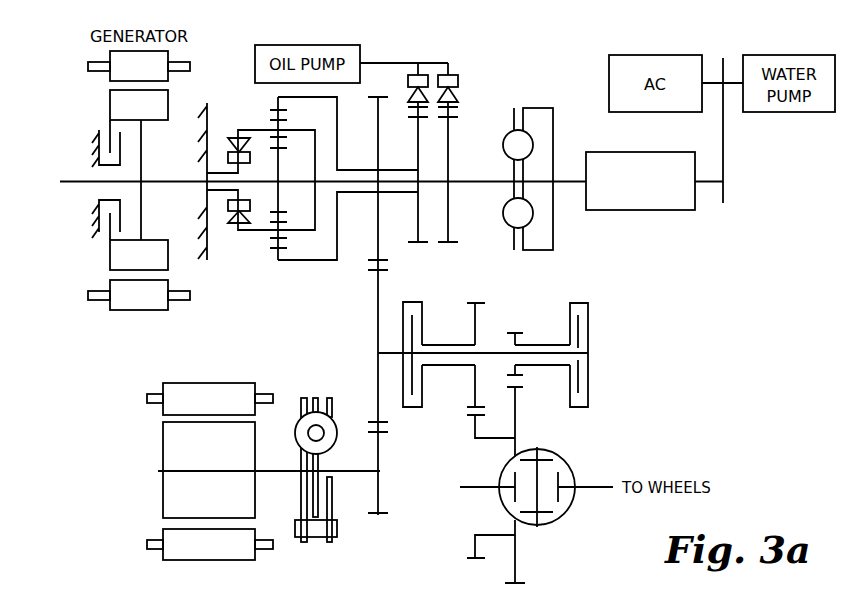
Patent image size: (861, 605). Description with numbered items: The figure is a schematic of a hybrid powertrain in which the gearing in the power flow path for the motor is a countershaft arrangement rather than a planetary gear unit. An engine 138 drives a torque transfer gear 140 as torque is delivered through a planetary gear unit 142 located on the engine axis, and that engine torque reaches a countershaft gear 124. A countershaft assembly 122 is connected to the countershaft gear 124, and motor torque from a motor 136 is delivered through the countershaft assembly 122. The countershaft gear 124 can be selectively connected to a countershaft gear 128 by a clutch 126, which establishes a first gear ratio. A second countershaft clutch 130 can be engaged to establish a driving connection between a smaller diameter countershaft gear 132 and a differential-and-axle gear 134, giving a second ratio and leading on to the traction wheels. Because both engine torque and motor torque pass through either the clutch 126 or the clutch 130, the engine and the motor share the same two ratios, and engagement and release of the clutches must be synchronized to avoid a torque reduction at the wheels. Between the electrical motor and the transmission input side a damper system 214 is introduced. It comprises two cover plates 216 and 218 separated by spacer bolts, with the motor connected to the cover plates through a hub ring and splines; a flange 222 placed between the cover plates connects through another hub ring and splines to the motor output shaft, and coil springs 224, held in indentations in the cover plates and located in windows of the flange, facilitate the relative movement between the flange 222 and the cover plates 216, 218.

The countershaft assembly 122 is at (493, 352).
The countershaft gear 124 is at (377, 312).
The clutch 126 is at (413, 303).
The countershaft gear 128 is at (473, 390).
The second countershaft clutch 130 is at (582, 383).
The smaller diameter countershaft gear 132 is at (520, 332).
The differential-and-axle gear 134 is at (517, 425).
The motor 136 is at (165, 495).
The engine 138 is at (666, 210).
The torque transfer gear 140 is at (376, 237).
The planetary gear unit 142 is at (268, 123).
The damper system 214 is at (315, 538).
The cover plate 216 is at (332, 515).
The cover plate 218 is at (298, 515).
The flange 222 is at (317, 503).
The coil springs 224 is at (295, 430).